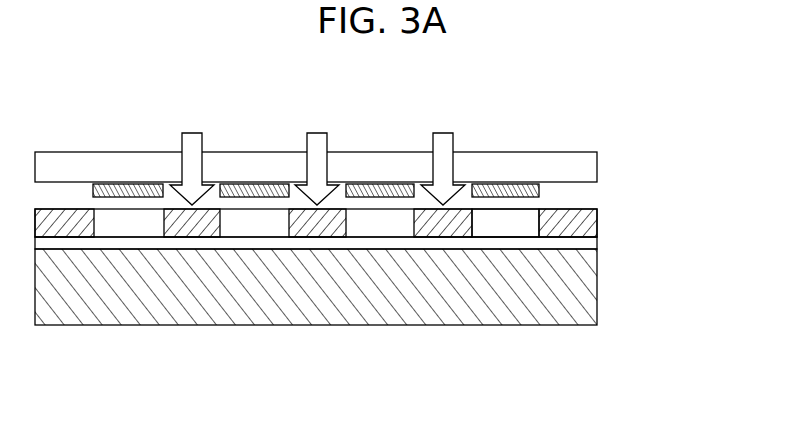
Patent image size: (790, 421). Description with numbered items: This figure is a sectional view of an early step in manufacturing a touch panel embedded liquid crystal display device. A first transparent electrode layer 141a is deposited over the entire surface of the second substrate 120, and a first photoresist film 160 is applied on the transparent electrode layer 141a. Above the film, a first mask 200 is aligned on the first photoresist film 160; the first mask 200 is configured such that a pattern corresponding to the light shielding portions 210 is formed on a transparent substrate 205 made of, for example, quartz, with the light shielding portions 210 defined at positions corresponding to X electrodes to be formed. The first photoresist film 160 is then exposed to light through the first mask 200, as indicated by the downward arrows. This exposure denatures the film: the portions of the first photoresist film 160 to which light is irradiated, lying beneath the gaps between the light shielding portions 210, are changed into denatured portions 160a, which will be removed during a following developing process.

The second substrate 120 is at (586, 295).
The first transparent electrode layer 141a is at (588, 242).
The denatured portions 160a is at (588, 228).
The first photoresist film 160 is at (507, 223).
The first mask 200 is at (378, 172).
The transparent substrate 205 is at (588, 172).
The light shielding portions 210 is at (539, 193).